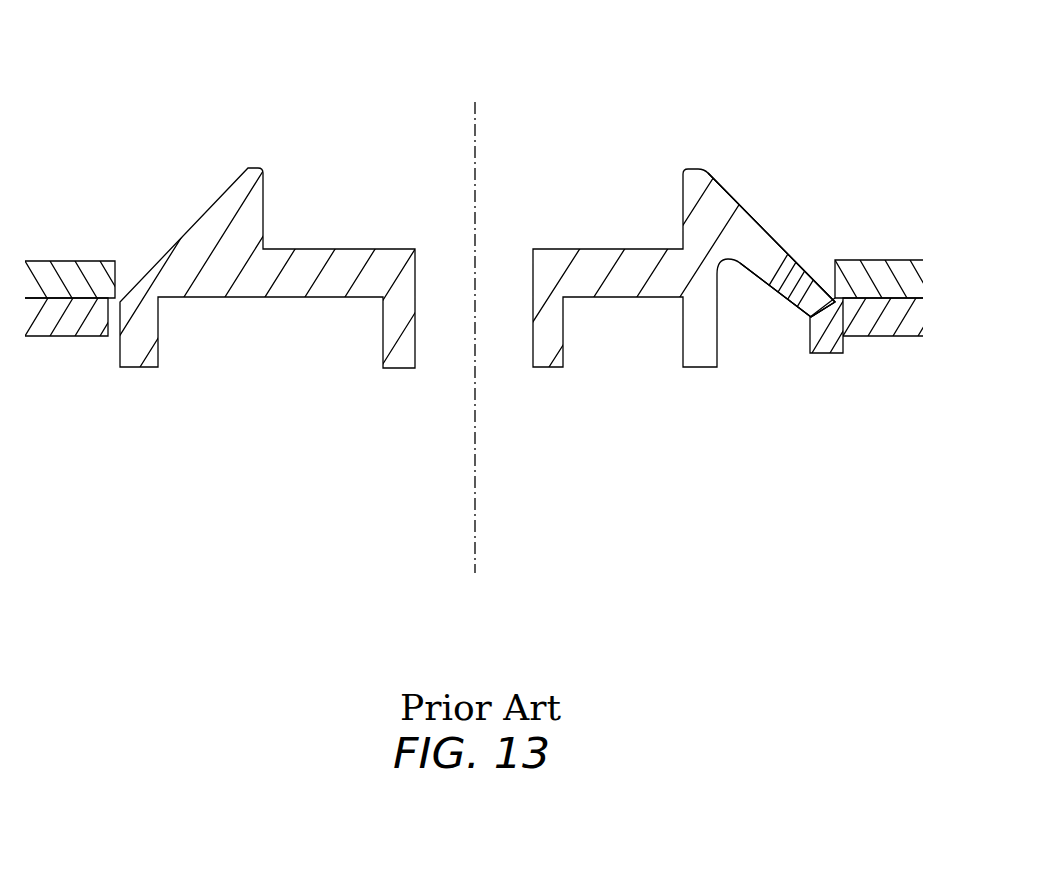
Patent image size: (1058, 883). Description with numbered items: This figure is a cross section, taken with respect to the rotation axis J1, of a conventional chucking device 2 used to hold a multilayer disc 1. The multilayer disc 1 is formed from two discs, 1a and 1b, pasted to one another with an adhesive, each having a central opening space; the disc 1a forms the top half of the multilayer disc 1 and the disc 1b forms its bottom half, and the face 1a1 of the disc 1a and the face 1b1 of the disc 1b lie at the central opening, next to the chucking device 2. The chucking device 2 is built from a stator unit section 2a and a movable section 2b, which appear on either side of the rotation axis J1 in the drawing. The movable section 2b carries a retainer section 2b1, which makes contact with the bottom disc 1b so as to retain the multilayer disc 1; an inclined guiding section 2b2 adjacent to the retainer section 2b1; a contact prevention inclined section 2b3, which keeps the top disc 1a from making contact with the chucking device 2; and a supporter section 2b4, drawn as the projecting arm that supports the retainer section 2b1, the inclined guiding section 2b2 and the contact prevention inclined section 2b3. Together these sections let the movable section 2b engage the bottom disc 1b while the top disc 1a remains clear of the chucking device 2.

The multilayer disc 1 is at (470, 294).
The chucking device 2 is at (490, 261).
The center axis line J1 is at (475, 138).
The disc 1a is at (882, 260).
The contact surface of upper portion 1a1 is at (118, 272).
The disc 1b is at (883, 337).
The contact surface of lower portion 1b1 is at (108, 332).
The stator unit section 2a is at (220, 280).
The movable section 2b is at (692, 275).
The retainer section 2b1 is at (830, 337).
The inclined guiding section 2b2 is at (828, 293).
The contact prevention inclined section 2b3 is at (812, 318).
The supporter section 2b4 is at (767, 253).